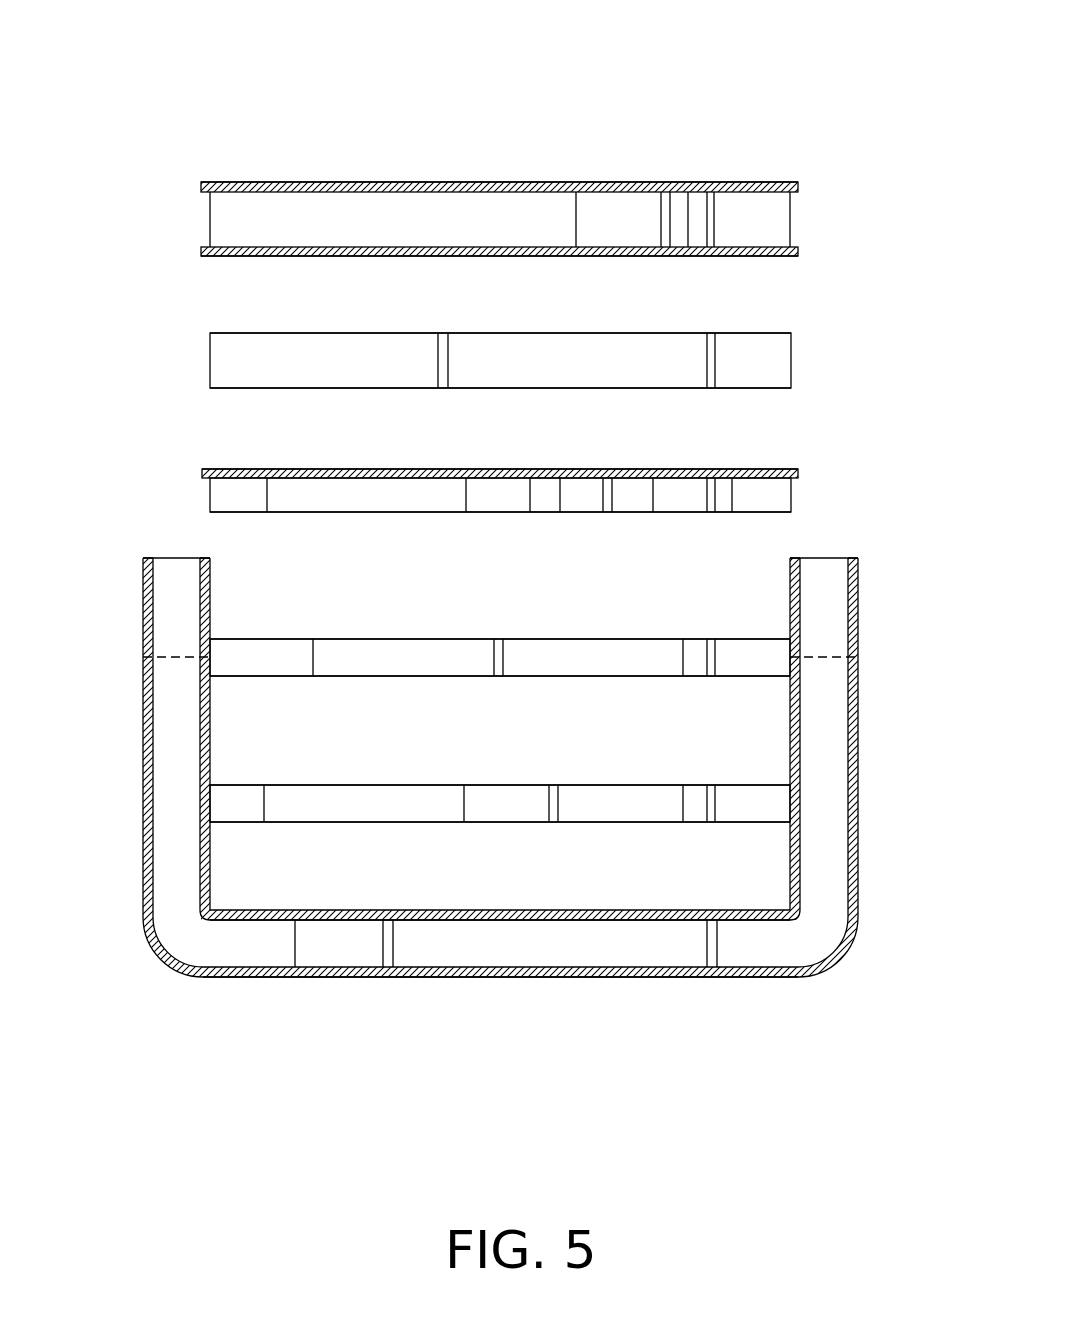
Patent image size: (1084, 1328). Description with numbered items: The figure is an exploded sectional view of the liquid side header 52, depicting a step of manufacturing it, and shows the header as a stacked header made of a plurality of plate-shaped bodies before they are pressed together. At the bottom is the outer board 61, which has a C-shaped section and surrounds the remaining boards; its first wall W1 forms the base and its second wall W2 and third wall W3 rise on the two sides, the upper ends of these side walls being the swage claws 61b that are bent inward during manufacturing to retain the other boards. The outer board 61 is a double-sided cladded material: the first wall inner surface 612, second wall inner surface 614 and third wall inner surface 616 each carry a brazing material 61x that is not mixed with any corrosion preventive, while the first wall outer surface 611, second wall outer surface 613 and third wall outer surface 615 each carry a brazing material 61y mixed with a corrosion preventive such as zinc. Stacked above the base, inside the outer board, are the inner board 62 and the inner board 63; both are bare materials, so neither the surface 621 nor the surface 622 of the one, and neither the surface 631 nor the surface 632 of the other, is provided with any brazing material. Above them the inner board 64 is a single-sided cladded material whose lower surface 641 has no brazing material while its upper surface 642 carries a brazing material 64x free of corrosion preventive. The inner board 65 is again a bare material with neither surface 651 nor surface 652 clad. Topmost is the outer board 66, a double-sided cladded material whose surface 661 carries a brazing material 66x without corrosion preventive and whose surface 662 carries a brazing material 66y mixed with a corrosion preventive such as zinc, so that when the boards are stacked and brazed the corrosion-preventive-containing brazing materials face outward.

The liquid side header 52 is at (136, 57).
The outer board 61 is at (498, 823).
The first wall outer surface 611 is at (260, 977).
The first wall inner surface 612 is at (262, 917).
The second wall outer surface 613 is at (148, 863).
The second wall inner surface 614 is at (208, 845).
The third wall outer surface 615 is at (850, 858).
The third wall inner surface 616 is at (793, 843).
The swage claw 61b is at (173, 613).
The brazing material 61x is at (735, 913).
The brazing material 61y is at (762, 977).
The first wall W1 is at (532, 942).
The second wall W2 is at (178, 742).
The third wall W3 is at (822, 770).
The inner board 62 is at (432, 811).
The surface 621 is at (465, 822).
The surface 622 is at (465, 785).
The inner board 63 is at (430, 663).
The surface 631 is at (494, 676).
The surface 632 is at (494, 639).
The inner board 64 is at (500, 492).
The surface 641 is at (327, 512).
The surface 642 is at (330, 473).
The brazing material 64x is at (723, 468).
The inner board 65 is at (439, 366).
The surface 651 is at (502, 388).
The surface 652 is at (502, 333).
The outer board 66 is at (488, 223).
The surface 661 is at (330, 254).
The surface 662 is at (330, 191).
The brazing material 66x is at (713, 252).
The brazing material 66y is at (736, 188).